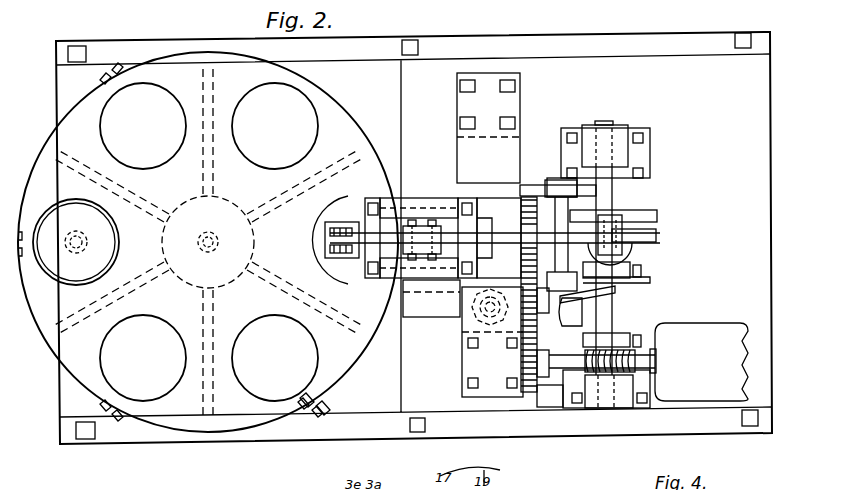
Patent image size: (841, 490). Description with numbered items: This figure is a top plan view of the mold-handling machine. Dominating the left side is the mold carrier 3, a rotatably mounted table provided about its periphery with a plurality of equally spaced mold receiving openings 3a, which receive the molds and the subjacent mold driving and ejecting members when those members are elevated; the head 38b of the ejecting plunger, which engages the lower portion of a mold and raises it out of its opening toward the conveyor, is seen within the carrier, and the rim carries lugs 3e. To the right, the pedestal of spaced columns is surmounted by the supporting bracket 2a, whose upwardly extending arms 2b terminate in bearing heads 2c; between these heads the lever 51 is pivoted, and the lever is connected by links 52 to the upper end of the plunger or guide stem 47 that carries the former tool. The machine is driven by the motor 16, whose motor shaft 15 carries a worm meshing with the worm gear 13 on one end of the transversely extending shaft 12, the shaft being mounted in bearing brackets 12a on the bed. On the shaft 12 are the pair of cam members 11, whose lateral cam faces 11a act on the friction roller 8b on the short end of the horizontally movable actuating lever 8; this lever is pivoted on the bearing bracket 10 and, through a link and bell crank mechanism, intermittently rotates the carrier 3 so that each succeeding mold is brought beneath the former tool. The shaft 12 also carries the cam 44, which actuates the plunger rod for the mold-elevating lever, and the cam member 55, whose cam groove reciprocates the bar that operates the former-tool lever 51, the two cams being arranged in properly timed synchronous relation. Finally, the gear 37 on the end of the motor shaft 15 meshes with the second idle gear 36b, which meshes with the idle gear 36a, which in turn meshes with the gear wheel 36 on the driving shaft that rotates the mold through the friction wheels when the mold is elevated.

The supporting bracket 2a is at (515, 165).
The upwardly extending arms 2b is at (493, 185).
The bearing heads 2c is at (600, 197).
The mold carrier 3 is at (62, 28).
The mold receiving openings 3a is at (108, 128).
The rim lugs 3e is at (305, 410).
The actuating lever 8 is at (432, 312).
The friction roller 8b is at (568, 326).
The bearing bracket 10 is at (472, 328).
The cam members 11 is at (652, 281).
The lateral cam faces 11a is at (612, 304).
The transversely extending shaft 12 is at (616, 201).
The bearing brackets 12a is at (618, 135).
The worm gear 13 is at (585, 368).
The motor shaft 15 is at (645, 361).
The motor 16 is at (701, 350).
The gear wheel 36 is at (534, 226).
The idle gear 36a is at (522, 256).
The second idle gear 36b is at (522, 366).
The gear 37 is at (534, 397).
The head 38b is at (62, 215).
The cam 44 is at (658, 237).
The plunger or guide stem 47 is at (338, 228).
The lever 51 is at (496, 240).
The links 52 is at (624, 252).
The cam member 55 is at (660, 217).